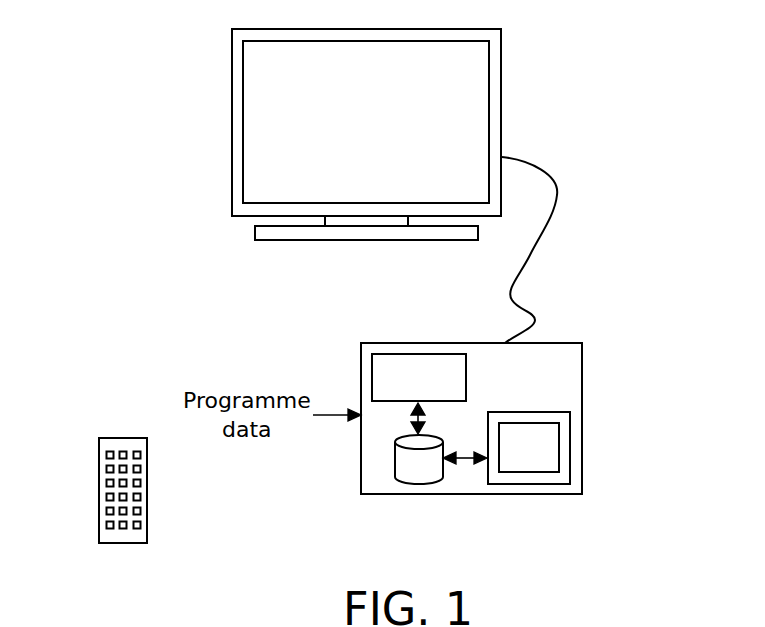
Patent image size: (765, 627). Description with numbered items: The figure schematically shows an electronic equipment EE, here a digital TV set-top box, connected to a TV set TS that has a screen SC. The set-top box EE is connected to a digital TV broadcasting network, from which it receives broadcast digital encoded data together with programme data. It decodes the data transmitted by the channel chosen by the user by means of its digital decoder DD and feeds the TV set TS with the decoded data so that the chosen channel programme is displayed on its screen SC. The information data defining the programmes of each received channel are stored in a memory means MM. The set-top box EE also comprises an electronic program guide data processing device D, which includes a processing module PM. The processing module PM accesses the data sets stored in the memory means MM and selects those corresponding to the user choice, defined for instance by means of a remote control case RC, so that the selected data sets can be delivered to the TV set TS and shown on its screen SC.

The TV set TS is at (232, 180).
The screen SC is at (254, 87).
The electronic equipment EE is at (583, 356).
The digital decoder DD is at (374, 367).
The memory means MM is at (418, 484).
The EPG data processing device D is at (570, 422).
The processing module PM is at (559, 457).
The remote control case RC is at (98, 470).